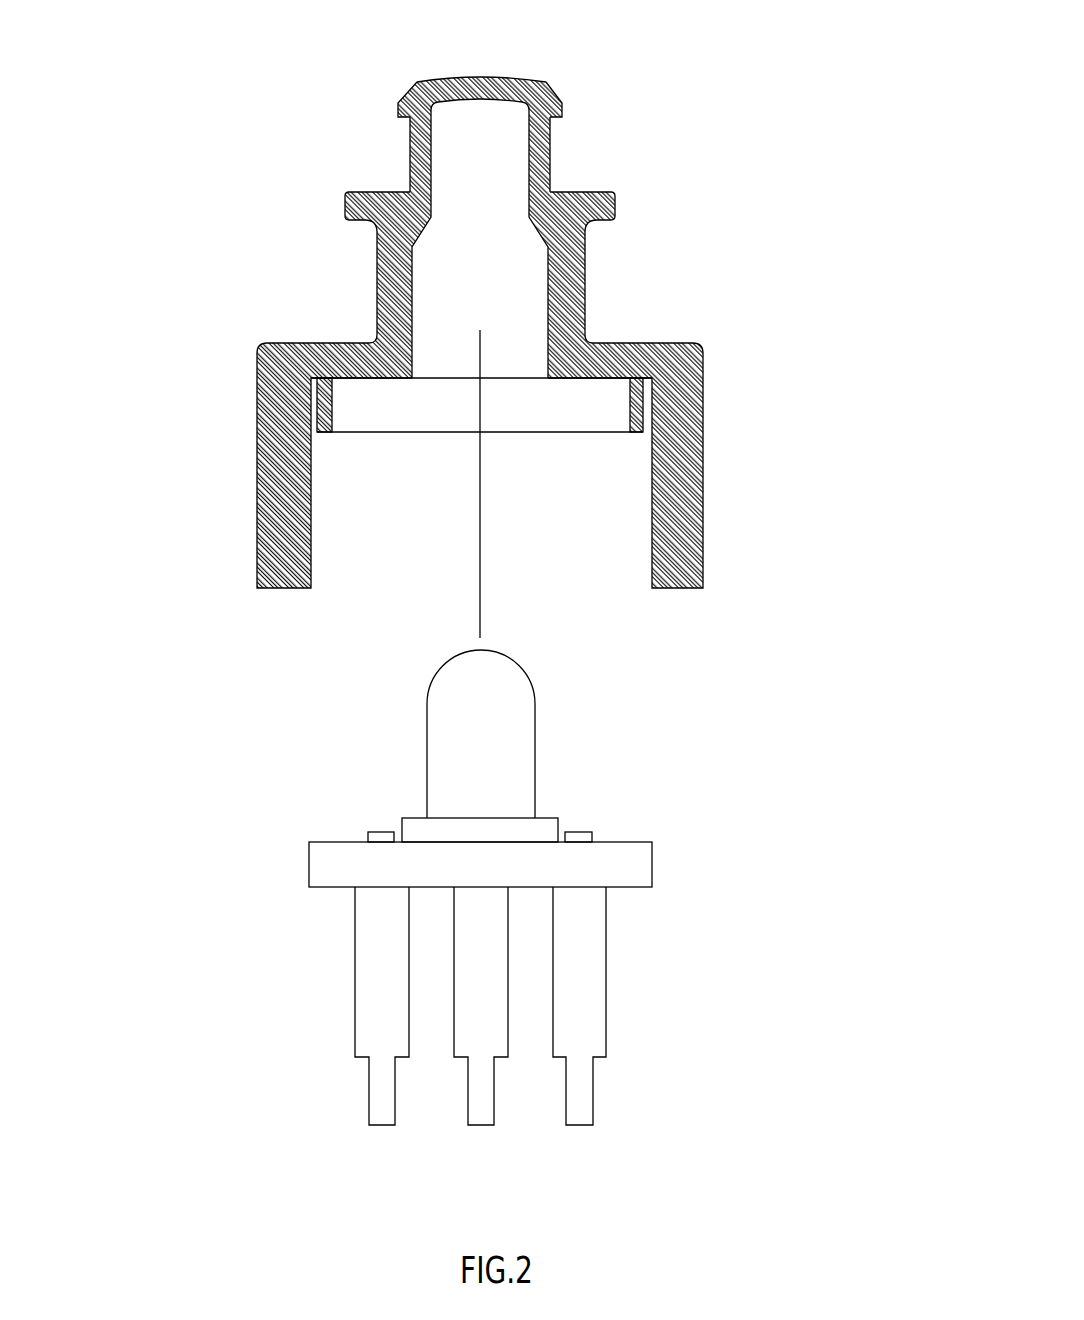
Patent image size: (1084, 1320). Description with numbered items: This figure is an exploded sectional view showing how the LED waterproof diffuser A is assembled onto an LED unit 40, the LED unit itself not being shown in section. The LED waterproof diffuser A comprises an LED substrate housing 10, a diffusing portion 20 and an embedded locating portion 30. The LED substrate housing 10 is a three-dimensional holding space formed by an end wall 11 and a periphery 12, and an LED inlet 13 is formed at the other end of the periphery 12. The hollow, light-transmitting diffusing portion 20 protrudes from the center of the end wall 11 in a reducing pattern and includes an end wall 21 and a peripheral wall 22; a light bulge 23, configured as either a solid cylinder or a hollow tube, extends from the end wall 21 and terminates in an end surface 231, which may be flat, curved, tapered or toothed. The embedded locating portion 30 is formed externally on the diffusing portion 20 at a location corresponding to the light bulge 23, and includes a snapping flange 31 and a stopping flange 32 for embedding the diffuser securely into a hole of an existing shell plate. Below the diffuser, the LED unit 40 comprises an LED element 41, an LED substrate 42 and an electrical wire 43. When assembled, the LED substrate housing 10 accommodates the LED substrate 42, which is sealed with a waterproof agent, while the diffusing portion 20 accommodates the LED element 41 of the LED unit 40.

The LED waterproof diffuser A is at (749, 232).
The LED substrate housing 10 is at (411, 481).
The end wall 11 is at (288, 328).
The periphery 12 is at (259, 445).
The LED inlet 13 is at (566, 530).
The diffusing portion 20 is at (405, 226).
The end wall 21 is at (392, 190).
The peripheral wall 22 is at (378, 278).
The light bulge 23 is at (455, 135).
The end surface 231 is at (480, 72).
The embedded locating portion 30 is at (559, 117).
The snapping flange 31 is at (562, 113).
The stopping flange 32 is at (615, 200).
The LED unit 40 is at (566, 887).
The LED element 41 is at (535, 725).
The LED substrate 42 is at (642, 860).
The electrical wire 43 is at (593, 1082).